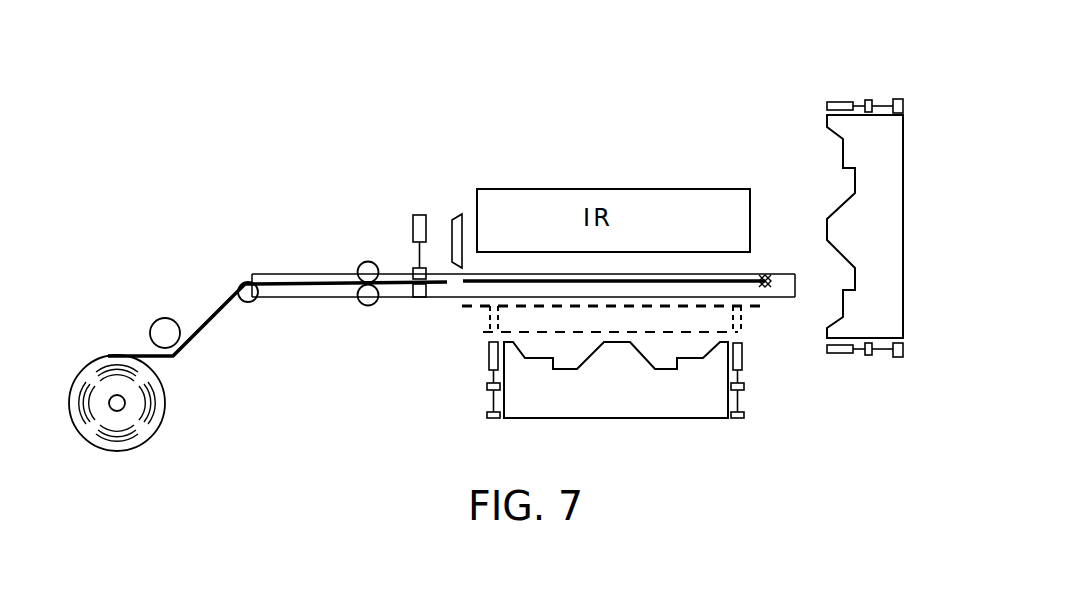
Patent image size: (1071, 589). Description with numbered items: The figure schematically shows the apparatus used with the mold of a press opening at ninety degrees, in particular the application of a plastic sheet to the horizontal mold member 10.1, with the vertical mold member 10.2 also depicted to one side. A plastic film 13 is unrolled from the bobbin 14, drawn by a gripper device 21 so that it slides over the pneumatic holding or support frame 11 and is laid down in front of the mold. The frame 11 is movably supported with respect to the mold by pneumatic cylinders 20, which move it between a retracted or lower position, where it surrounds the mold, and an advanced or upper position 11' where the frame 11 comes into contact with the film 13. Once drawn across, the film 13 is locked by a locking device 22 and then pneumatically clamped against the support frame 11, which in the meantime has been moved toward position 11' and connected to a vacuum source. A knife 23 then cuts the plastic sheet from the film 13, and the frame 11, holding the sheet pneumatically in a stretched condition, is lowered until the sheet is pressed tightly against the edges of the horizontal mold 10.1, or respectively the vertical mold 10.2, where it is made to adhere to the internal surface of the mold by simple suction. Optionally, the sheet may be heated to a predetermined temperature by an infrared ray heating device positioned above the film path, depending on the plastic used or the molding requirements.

The plastic film 13 is at (212, 310).
The bobbin 14 is at (137, 423).
The locking device 22 is at (412, 270).
The knife 23 is at (453, 220).
The gripper device 21 is at (769, 276).
The advanced or upper position 11' is at (575, 334).
The frame 11 is at (671, 209).
The pneumatic cylinders 20 is at (491, 400).
The horizontal mold member 10.1 is at (548, 395).
The vertical mold member 10.2 is at (858, 156).